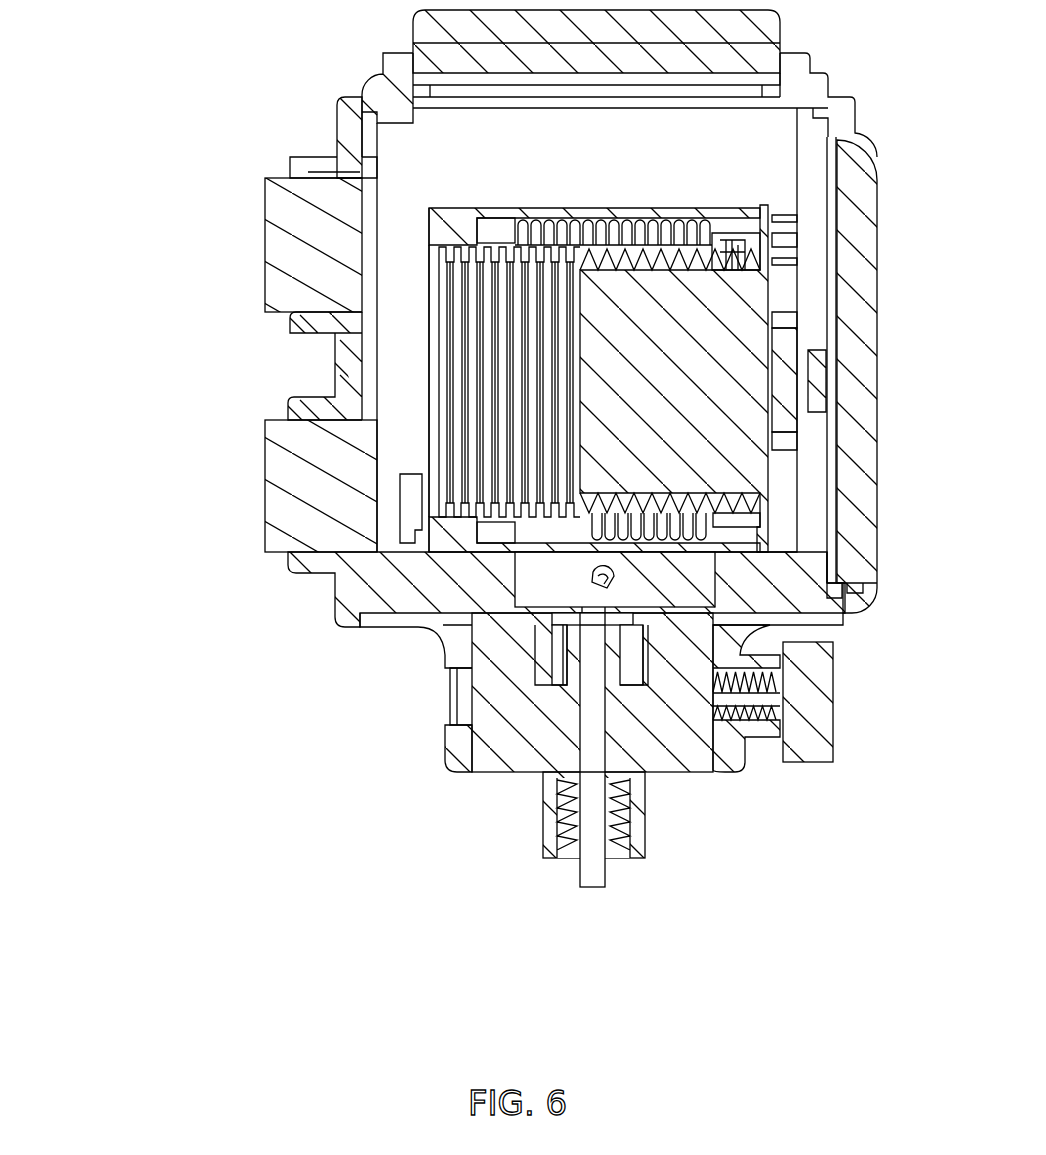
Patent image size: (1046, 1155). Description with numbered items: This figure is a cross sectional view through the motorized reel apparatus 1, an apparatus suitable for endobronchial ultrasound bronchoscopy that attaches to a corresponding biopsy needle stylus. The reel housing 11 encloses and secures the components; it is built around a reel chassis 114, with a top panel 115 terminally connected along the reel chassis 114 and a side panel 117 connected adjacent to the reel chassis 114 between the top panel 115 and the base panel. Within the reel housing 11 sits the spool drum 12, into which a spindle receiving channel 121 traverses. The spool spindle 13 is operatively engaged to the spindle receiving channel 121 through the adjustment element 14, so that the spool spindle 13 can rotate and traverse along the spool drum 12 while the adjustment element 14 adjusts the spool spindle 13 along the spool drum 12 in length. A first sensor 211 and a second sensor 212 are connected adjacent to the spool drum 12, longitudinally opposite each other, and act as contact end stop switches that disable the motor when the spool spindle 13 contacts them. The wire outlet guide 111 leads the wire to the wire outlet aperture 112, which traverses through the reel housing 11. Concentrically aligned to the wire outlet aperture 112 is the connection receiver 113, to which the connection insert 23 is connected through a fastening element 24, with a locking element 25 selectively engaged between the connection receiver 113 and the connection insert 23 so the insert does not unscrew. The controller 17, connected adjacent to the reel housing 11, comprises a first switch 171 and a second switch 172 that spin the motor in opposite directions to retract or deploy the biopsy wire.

The motorized reel apparatus 1 is at (107, 167).
The reel housing 11 is at (230, 92).
The spool drum 12 is at (462, 204).
The spool spindle 13 is at (766, 229).
The adjustment element 14 is at (658, 276).
The controller 17 is at (218, 358).
The connection insert 23 is at (468, 700).
The fastening element 24 is at (552, 806).
The locking element 25 is at (836, 698).
The wire outlet guide 111 is at (588, 568).
The wire outlet aperture 112 is at (610, 606).
The connection receiver 113 is at (747, 763).
The reel chassis 114 is at (333, 113).
The top panel 115 is at (378, 58).
The side panel 117 is at (878, 380).
The spindle receiving channel 121 is at (428, 283).
The first switch 171 is at (262, 236).
The second switch 172 is at (262, 465).
The first sensor 211 is at (799, 503).
The second sensor 212 is at (411, 470).